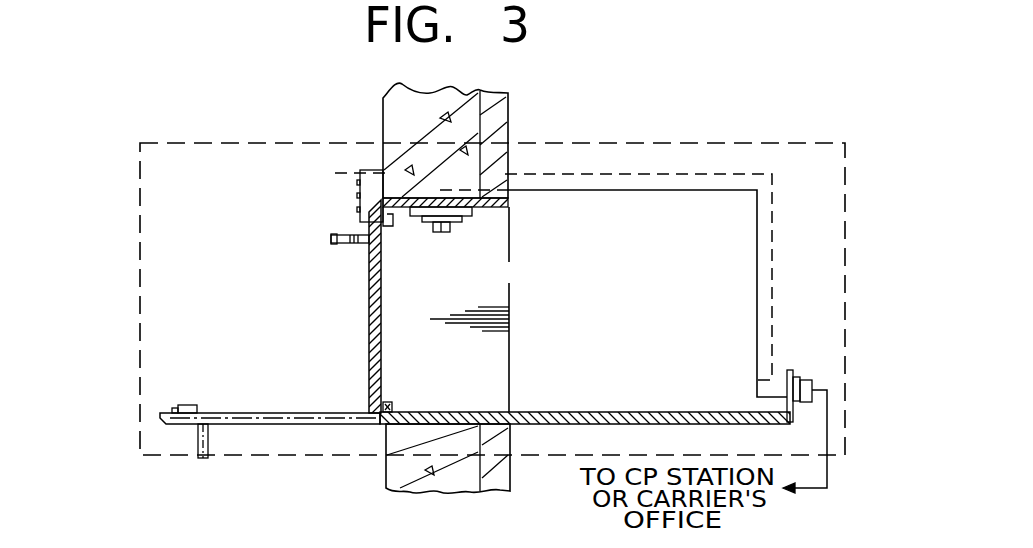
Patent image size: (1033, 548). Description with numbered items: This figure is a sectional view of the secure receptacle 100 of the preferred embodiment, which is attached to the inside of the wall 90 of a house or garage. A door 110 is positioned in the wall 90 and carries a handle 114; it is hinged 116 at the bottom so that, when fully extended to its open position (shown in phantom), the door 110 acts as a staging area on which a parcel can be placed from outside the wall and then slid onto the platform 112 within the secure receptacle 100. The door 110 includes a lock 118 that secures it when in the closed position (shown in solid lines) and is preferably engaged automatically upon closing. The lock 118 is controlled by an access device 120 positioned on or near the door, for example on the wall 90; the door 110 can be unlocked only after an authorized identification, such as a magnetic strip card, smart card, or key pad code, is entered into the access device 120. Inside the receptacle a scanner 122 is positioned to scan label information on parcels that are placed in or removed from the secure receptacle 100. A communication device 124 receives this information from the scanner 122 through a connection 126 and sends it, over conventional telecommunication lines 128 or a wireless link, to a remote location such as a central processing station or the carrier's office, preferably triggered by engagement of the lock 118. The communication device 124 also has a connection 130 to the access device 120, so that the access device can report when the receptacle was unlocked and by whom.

The wall 90 is at (393, 126).
The secure receptacle 100 is at (757, 142).
The door 110 is at (368, 330).
The platform 112 is at (576, 411).
The handle 114 is at (331, 239).
The hinge 116 is at (392, 410).
The lock 118 is at (384, 215).
The access device 120 is at (361, 176).
The scanner 122 is at (455, 232).
The communication device 124 is at (795, 372).
The connection 126 is at (632, 191).
The telecommunication lines 128 is at (826, 432).
The connection 130 is at (613, 176).